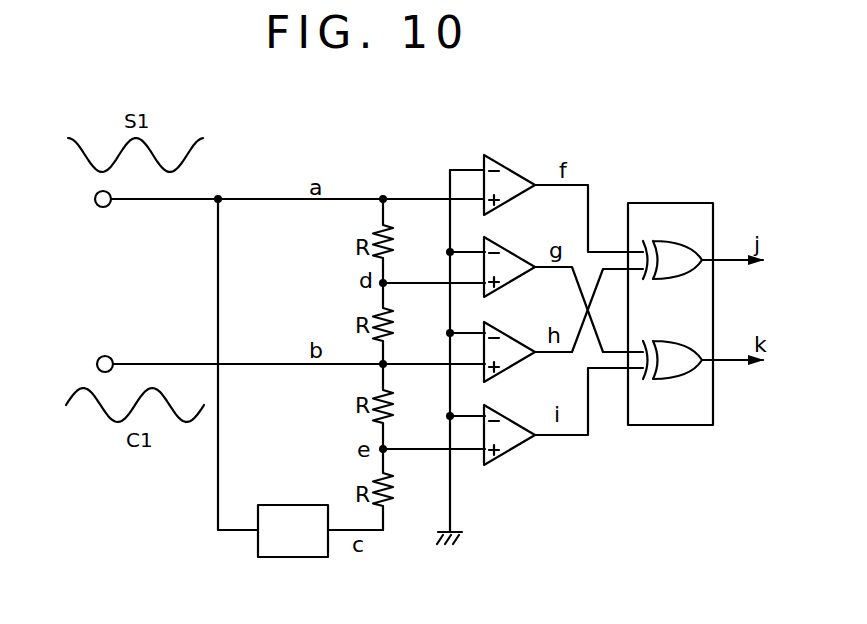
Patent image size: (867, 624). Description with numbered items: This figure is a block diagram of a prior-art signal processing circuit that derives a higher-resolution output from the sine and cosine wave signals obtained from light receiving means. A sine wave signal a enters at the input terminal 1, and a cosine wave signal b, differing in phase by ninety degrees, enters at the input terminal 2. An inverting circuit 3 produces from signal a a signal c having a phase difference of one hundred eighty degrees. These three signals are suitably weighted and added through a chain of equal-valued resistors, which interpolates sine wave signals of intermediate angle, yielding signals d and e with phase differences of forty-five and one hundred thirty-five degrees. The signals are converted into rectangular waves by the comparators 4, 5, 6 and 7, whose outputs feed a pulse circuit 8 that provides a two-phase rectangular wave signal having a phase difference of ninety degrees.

The input terminal 1 is at (96, 193).
The input terminal 2 is at (98, 357).
The inverting circuit 3 is at (292, 512).
The comparator 4 is at (515, 178).
The comparator 5 is at (514, 260).
The comparator 6 is at (517, 346).
The comparator 7 is at (517, 428).
The pulse circuit 8 is at (675, 208).